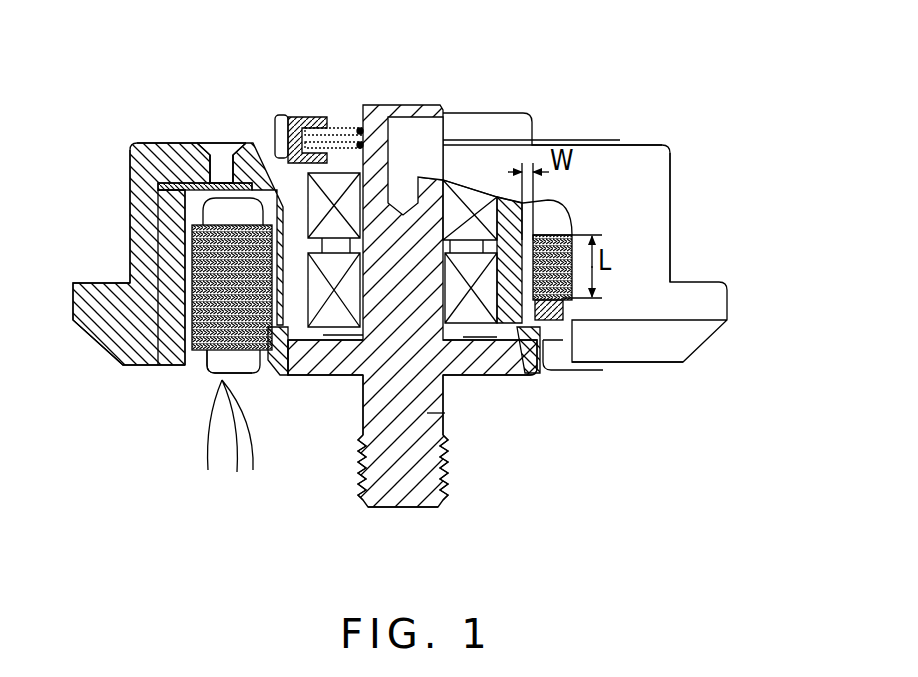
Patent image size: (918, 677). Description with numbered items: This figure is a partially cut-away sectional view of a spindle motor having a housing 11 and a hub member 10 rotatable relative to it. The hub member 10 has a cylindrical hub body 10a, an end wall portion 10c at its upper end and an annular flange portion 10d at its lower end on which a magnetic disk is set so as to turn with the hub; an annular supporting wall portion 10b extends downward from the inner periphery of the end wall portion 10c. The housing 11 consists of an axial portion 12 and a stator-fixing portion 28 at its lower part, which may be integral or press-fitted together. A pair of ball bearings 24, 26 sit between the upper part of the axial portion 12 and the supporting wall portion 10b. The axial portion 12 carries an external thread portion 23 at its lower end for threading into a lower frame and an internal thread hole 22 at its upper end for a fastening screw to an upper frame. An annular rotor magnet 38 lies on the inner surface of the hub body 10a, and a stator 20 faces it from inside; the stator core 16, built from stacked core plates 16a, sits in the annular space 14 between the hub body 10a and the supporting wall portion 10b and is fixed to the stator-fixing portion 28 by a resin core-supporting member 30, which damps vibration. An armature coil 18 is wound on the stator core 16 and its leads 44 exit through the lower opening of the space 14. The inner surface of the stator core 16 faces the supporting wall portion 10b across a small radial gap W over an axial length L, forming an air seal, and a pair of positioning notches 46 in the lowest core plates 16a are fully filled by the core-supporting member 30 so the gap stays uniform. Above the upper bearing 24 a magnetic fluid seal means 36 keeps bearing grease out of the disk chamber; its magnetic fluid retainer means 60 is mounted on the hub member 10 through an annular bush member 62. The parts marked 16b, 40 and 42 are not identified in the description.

The hub member 10 is at (155, 142).
The cylindrical hub body 10a is at (143, 207).
The annular supporting wall portion 10b is at (510, 197).
The end wall portion 10c is at (180, 150).
The annular flange portion 10d is at (88, 308).
The housing 11 is at (356, 440).
The axial portion 12 is at (446, 436).
The annular space 14 is at (200, 358).
The stator core 16 is at (246, 374).
The core plates 16a is at (150, 345).
The bobbin coil portion 16b is at (577, 318).
The armature coil 18 is at (615, 140).
The stator 20 is at (571, 378).
The internal thread hole 22 is at (400, 118).
The external thread portion 23 is at (448, 478).
The ball bearing 24 is at (249, 182).
The ball bearing 26 is at (445, 395).
The stator-fixing portion 28 is at (498, 367).
The core-supporting member 30 is at (538, 347).
The magnetic fluid seal means 36 is at (349, 110).
The annular rotor magnet 38 is at (168, 263).
The screw 40 is at (222, 160).
The cover block 42 is at (153, 160).
The leads 44 is at (222, 380).
The notches 46 is at (617, 363).
The magnetic fluid retainer means 60 is at (338, 111).
The annular bush member 62 is at (293, 112).